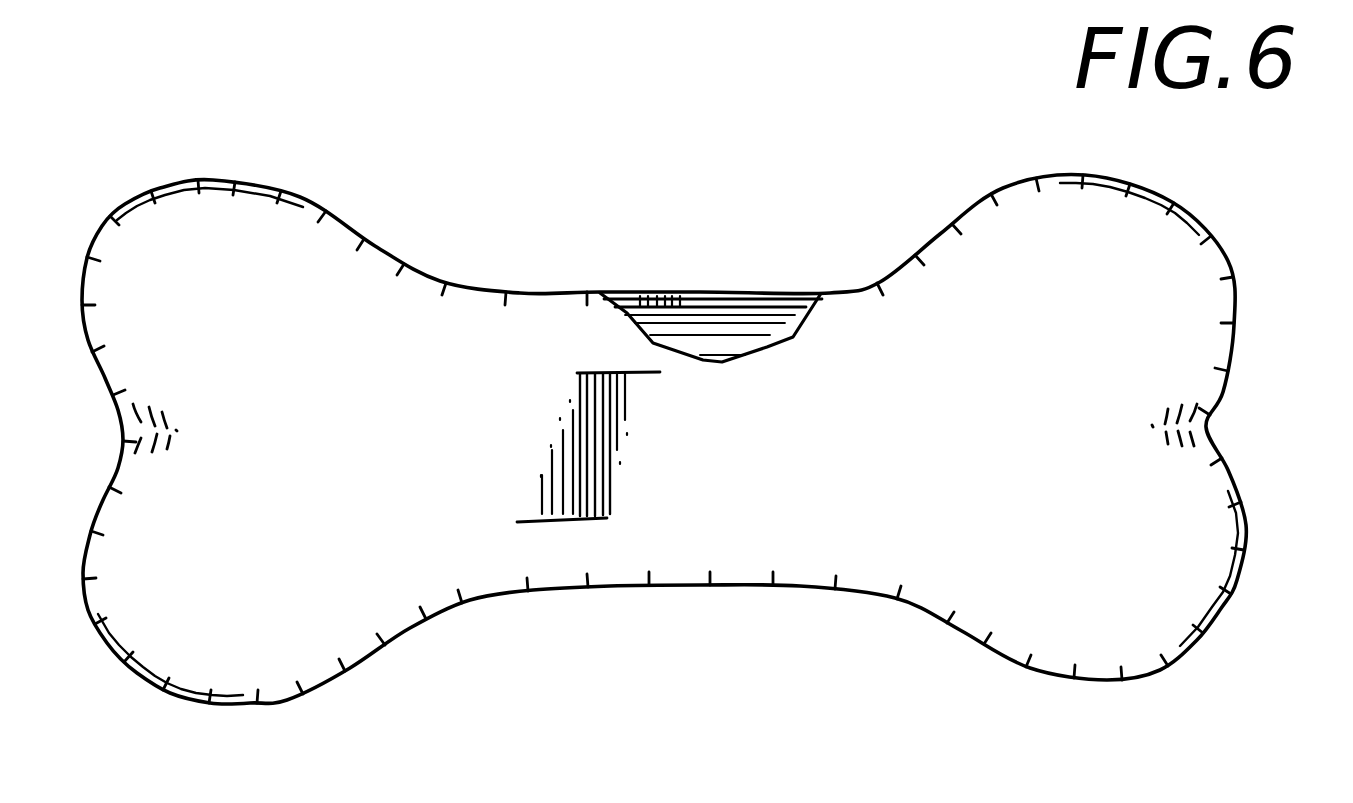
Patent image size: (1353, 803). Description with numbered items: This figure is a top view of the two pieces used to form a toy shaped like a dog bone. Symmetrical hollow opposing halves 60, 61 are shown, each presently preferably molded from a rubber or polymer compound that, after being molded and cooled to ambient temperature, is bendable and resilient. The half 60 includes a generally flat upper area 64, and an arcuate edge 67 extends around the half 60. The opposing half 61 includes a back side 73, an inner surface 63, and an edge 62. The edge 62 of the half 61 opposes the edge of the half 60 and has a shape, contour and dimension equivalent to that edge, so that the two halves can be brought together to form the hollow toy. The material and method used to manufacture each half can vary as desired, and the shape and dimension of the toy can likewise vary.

The half 60 is at (1143, 300).
The half 61 is at (792, 285).
The edge 62 is at (618, 296).
The inner surface 63 is at (713, 333).
The generally flat upper area 64 is at (716, 522).
The arcuate edge 67 is at (366, 262).
The back side 73 is at (758, 290).